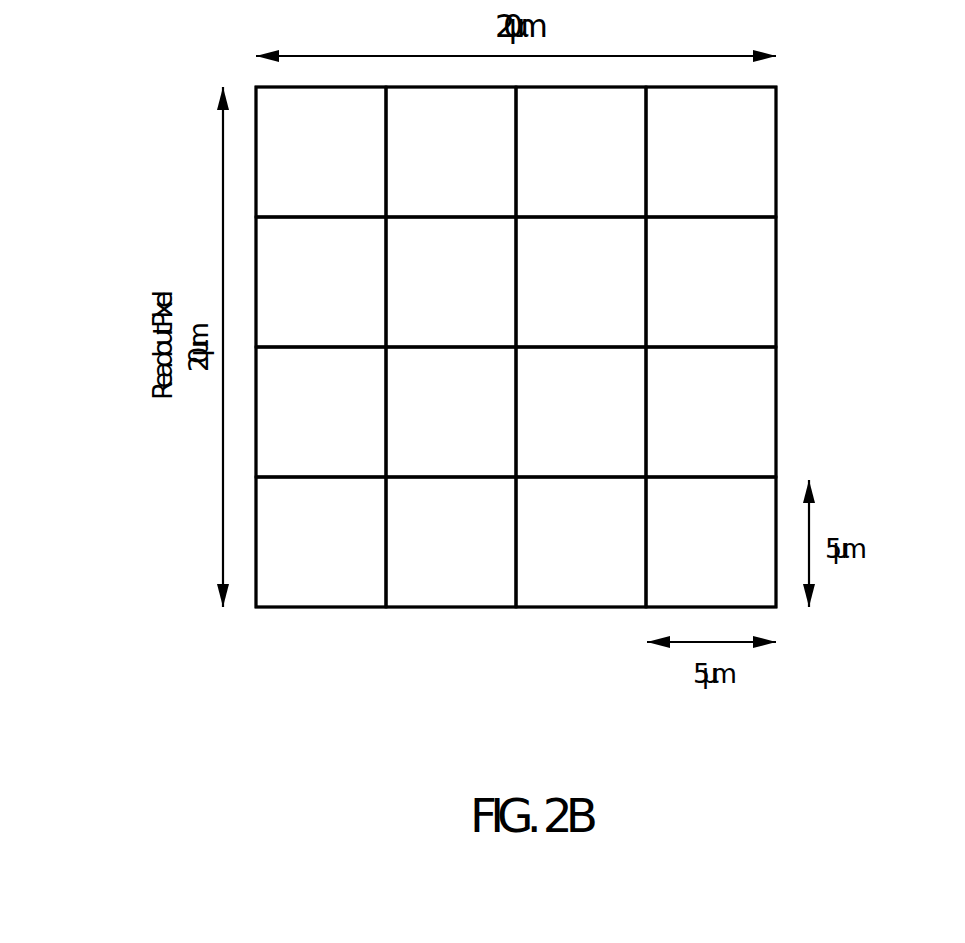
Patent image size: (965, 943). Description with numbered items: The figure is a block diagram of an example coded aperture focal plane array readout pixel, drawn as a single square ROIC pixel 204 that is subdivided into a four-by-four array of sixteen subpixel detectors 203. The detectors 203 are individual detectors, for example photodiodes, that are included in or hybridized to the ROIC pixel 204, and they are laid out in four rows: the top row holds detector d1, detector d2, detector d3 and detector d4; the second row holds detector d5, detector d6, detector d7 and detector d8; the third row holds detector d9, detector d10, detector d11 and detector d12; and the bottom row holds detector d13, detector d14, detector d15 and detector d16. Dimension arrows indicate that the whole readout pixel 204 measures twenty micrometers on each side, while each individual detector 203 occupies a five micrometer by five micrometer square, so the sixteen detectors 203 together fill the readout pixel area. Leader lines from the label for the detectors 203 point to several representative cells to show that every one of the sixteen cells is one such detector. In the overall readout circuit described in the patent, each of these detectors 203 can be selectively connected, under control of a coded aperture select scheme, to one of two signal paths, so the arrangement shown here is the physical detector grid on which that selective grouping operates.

The detectors 203 is at (609, 393).
The ROIC pixel 204 is at (127, 133).
The detector d1 is at (321, 152).
The detector d2 is at (451, 152).
The detector d3 is at (581, 152).
The detector d4 is at (711, 152).
The detector d5 is at (321, 282).
The detector d6 is at (451, 282).
The detector d7 is at (581, 282).
The detector d8 is at (711, 282).
The detector d9 is at (321, 412).
The detector d10 is at (451, 412).
The detector d11 is at (581, 412).
The detector d12 is at (711, 412).
The detector d13 is at (321, 542).
The detector d14 is at (451, 542).
The detector d15 is at (581, 542).
The detector d16 is at (711, 542).